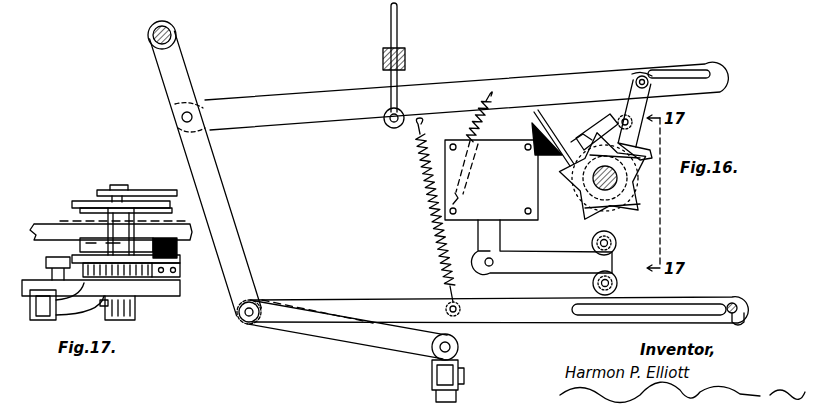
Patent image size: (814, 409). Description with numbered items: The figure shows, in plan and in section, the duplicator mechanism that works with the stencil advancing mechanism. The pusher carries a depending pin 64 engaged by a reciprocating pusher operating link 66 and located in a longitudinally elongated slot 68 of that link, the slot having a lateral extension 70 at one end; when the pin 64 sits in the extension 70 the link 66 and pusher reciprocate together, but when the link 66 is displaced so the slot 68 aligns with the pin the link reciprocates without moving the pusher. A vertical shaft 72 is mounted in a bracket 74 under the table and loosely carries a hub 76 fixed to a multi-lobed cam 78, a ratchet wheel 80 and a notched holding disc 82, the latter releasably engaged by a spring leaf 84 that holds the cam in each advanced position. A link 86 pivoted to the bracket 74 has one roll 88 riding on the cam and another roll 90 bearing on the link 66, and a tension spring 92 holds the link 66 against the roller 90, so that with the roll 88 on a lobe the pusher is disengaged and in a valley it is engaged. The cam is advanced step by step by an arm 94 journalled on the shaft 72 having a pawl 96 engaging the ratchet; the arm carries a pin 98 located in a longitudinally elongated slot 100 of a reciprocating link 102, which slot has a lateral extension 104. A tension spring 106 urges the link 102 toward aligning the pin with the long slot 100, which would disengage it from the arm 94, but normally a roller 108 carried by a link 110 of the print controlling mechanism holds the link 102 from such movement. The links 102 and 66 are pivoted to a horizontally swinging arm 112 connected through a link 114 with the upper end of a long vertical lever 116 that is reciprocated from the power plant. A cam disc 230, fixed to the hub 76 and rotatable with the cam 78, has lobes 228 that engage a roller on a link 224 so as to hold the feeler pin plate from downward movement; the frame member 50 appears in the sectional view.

In FIG. 17, the frame member 50 is at (52, 228).
In FIG. 16, the depending pin 64 is at (734, 303).
In FIG. 16, the pusher operating link 66 is at (520, 322).
In FIG. 16, the longitudinally elongated slot 68 is at (688, 308).
In FIG. 16, the lateral extension 70 is at (748, 314).
In FIG. 16, the vertical shaft 72 is at (622, 176).
In FIG. 16, the bracket 74 is at (573, 137).
In FIG. 17, the bracket 74 is at (84, 243).
In FIG. 16, the hub 76 is at (620, 185).
In FIG. 17, the hub 76 is at (133, 228).
In FIG. 16, the multi-lobed cam 78 is at (640, 158).
In FIG. 17, the multi-lobed cam 78 is at (178, 258).
In FIG. 16, the ratchet wheel 80 is at (645, 200).
In FIG. 17, the ratchet wheel 80 is at (150, 285).
In FIG. 17, the notched holding disc 82 is at (100, 296).
In FIG. 16, the spring leaf 84 is at (562, 140).
In FIG. 17, the spring leaf 84 is at (178, 270).
In FIG. 16, the link 86 is at (541, 247).
In FIG. 17, the link 86 is at (50, 263).
In FIG. 16, the roll 88 is at (592, 243).
In FIG. 17, the roll 88 is at (50, 275).
In FIG. 16, the roll 90 is at (592, 285).
In FIG. 16, the tension spring 92 is at (430, 238).
In FIG. 16, the arm 94 is at (645, 102).
In FIG. 17, the arm 94 is at (178, 290).
In FIG. 16, the pawl 96 is at (598, 118).
In FIG. 16, the pin 98 is at (644, 77).
In FIG. 16, the longitudinally elongated slot 100 is at (692, 72).
In FIG. 16, the reciprocating link 102 is at (512, 80).
In FIG. 16, the lateral extension 104 is at (636, 76).
In FIG. 16, the tension spring 106 is at (484, 126).
In FIG. 16, the roller 108 is at (385, 124).
In FIG. 16, the link 110 is at (390, 24).
In FIG. 16, the horizontally swinging arm 112 is at (186, 83).
In FIG. 16, the link 114 is at (356, 337).
In FIG. 16, the long vertical lever 116 is at (466, 380).
In FIG. 17, the link 224 is at (150, 190).
In FIG. 17, the lobes 228 is at (72, 203).
In FIG. 17, the cam disc 230 is at (78, 203).